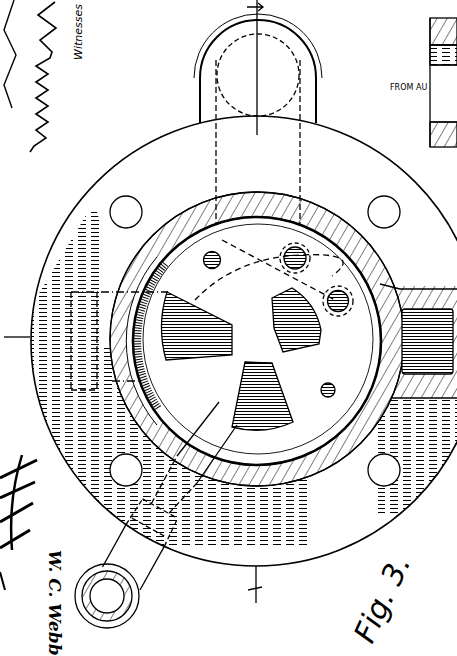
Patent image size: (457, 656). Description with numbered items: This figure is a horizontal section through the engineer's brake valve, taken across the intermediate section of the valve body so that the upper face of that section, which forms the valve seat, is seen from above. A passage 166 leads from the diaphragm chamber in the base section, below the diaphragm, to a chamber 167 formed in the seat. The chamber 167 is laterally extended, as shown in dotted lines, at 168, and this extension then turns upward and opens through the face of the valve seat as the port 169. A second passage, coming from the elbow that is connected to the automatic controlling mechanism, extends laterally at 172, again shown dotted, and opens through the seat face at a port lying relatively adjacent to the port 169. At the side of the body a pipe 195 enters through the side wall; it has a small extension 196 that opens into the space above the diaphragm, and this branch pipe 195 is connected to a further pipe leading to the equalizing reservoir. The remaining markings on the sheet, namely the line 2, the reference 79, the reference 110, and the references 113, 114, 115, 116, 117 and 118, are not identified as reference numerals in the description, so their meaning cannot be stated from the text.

The section line 2- 2 is at (251, 310).
The casing ring 79 is at (209, 251).
The inlet boss 110 is at (258, 119).
The port 113 is at (383, 343).
The small port 114 is at (330, 397).
The valve segment 115 is at (321, 341).
The port 116 is at (204, 259).
The small port 117 is at (335, 390).
The outlet port 118 is at (443, 290).
The passage 166 is at (76, 292).
The chamber 167 is at (190, 362).
The lateral extension of chamber 168 is at (252, 334).
The port 169 is at (284, 254).
The lateral extension of passage 172 is at (343, 220).
The pipe 195 is at (157, 558).
The small extension of pipe 196 is at (183, 499).